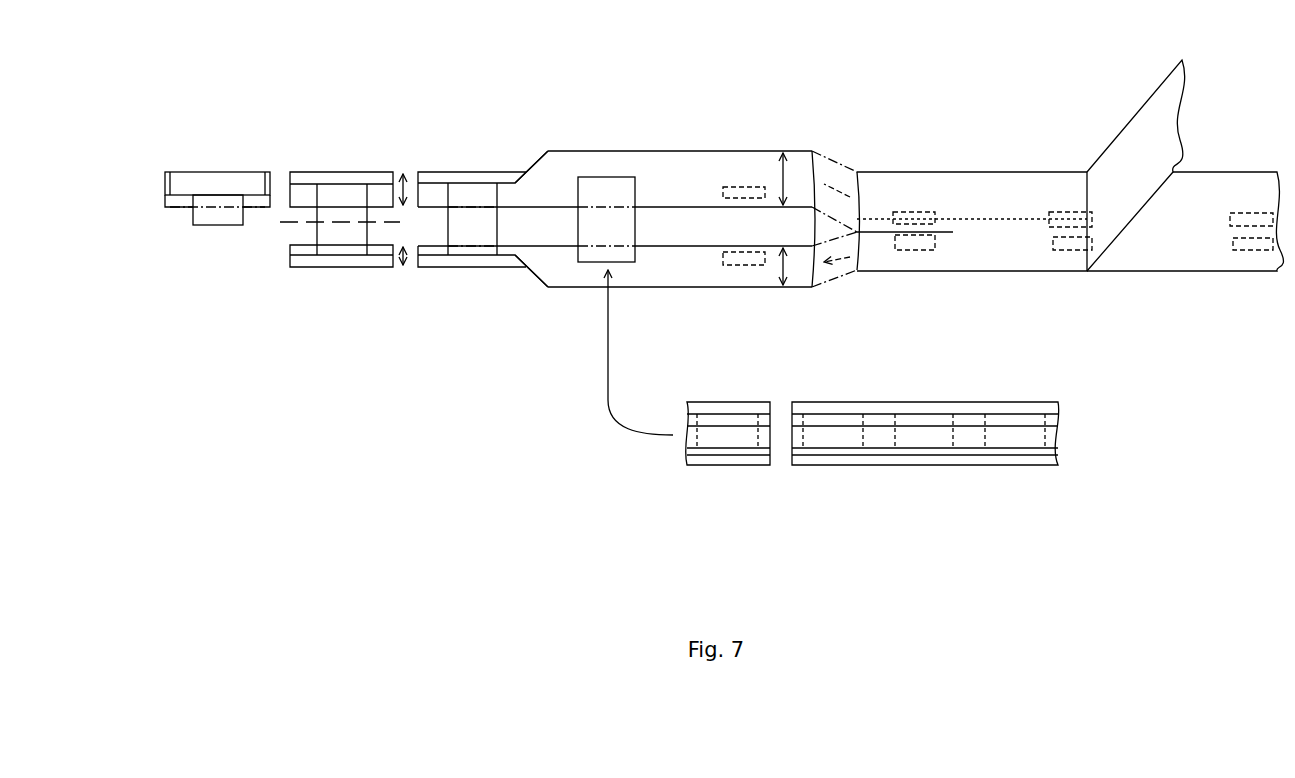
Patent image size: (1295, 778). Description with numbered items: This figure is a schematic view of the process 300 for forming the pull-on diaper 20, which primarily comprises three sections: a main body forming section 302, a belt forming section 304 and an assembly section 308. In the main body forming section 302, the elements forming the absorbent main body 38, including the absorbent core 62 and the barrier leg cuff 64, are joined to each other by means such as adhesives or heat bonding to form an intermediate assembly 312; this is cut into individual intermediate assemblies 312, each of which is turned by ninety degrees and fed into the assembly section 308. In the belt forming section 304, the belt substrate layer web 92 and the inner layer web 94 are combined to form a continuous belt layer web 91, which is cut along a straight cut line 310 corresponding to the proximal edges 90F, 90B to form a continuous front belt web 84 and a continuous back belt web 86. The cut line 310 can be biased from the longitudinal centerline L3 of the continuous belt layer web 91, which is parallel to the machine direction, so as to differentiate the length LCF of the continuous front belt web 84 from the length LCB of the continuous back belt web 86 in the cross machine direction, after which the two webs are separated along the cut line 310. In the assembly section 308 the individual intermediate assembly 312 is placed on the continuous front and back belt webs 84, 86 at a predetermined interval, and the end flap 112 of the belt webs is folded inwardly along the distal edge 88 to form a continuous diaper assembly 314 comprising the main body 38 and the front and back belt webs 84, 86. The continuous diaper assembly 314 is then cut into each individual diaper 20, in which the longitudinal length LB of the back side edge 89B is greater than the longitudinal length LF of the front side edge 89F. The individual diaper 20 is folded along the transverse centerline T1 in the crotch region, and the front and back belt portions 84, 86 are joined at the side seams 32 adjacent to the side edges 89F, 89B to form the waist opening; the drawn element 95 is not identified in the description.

The process 300 is at (463, 413).
The assembly section 308 is at (621, 79).
The belt forming section 304 is at (935, 79).
The main body forming section 302 is at (962, 487).
The termination block 95 is at (175, 207).
The side seams 32 is at (170, 172).
The front side edge 89F is at (288, 258).
The back side edge 89B is at (288, 190).
The pull-on diaper 20 is at (348, 172).
The transverse centerline T1 is at (286, 226).
The longitudinal length of the back side edge LB is at (403, 170).
The longitudinal length of the front side edge LF is at (403, 270).
The distal edge 88 is at (482, 172).
The absorbent main body 38 is at (470, 200).
The continuous diaper assembly 314 is at (440, 268).
The end flap 112 is at (505, 180).
The back belt portion 86 is at (680, 170).
The front belt portion 84 is at (680, 280).
The back proximal edge 90B is at (668, 207).
The front proximal edge 90F is at (766, 232).
The length of the continuous back belt web LCB is at (790, 178).
The length of the continuous front belt web LCF is at (790, 265).
The continuous belt layer web 91 is at (1037, 190).
The longitudinal centerline L3 is at (997, 215).
The cut line 310 is at (877, 234).
The inner layer web 94 is at (1143, 105).
The belt substrate layer web 92 is at (1248, 172).
The intermediate assembly 312 is at (588, 263).
The absorbent core 62 is at (1020, 405).
The barrier leg cuff 64 is at (873, 418).